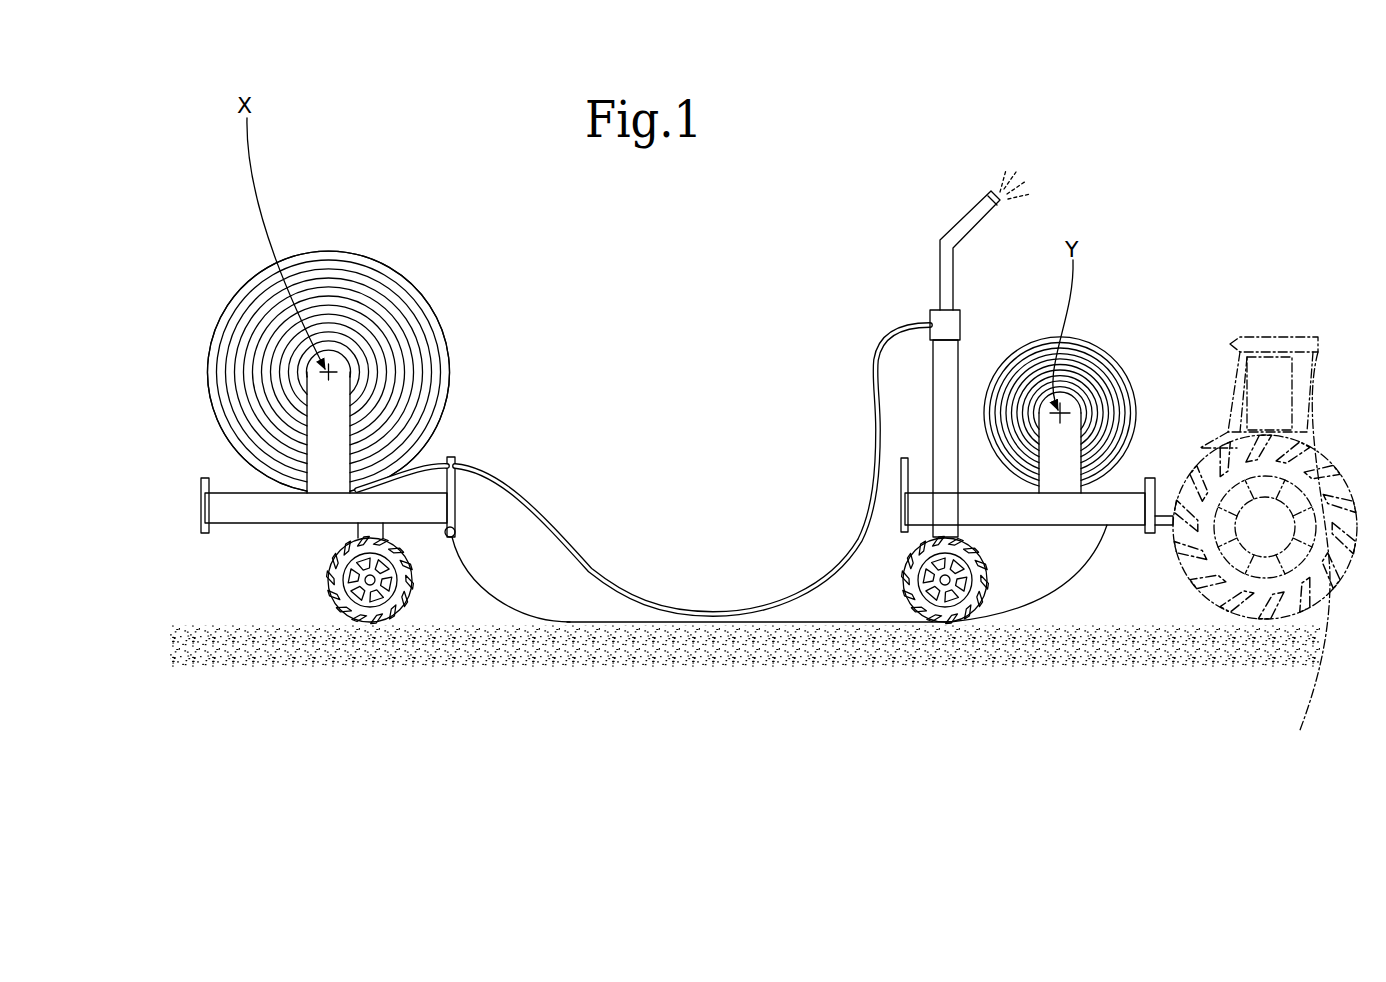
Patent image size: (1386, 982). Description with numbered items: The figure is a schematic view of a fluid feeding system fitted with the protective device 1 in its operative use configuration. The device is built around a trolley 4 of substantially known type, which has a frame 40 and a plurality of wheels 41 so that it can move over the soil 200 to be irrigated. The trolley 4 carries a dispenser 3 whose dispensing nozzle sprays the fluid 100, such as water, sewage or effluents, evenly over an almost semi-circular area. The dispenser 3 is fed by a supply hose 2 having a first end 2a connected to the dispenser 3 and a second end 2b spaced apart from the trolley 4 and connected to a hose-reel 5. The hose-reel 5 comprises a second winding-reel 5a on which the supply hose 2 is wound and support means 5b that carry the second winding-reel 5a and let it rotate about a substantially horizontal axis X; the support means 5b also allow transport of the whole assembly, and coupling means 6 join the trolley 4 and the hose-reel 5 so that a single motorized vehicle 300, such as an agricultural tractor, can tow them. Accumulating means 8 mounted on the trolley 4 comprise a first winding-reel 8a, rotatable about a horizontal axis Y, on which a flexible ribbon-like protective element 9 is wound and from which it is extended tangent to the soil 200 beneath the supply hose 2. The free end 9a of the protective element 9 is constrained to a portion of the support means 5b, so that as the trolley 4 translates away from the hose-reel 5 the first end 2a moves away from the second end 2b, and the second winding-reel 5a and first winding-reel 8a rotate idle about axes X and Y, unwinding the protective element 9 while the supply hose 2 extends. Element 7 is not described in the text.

The fluid 100 is at (1046, 154).
The protective device 1 is at (781, 344).
The supply hose 2 is at (453, 390).
The first end 2a is at (904, 317).
The second end 2b is at (321, 391).
The dispenser 3 is at (960, 218).
The trolley 4 is at (893, 597).
The hose-reel 5 is at (441, 273).
The second winding-reel 5a is at (451, 345).
The support means 5b is at (313, 570).
The coupling means 6 is at (455, 508).
The frame end plate 7 is at (198, 522).
The accumulating means 8 is at (1084, 328).
The first winding-reel 8a is at (1113, 355).
The protective element 9 is at (1079, 570).
The free end 9a is at (445, 547).
The frame 40 is at (1007, 510).
The wheels 41 is at (958, 607).
The soil 200 is at (1157, 677).
The motorized vehicle 300 is at (1293, 333).